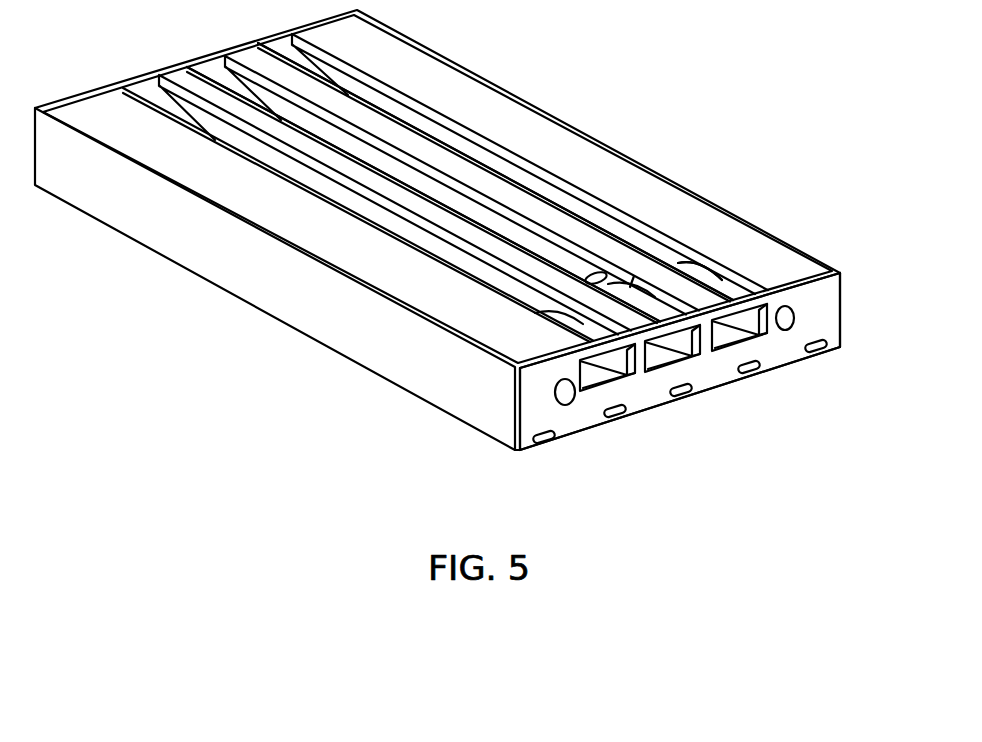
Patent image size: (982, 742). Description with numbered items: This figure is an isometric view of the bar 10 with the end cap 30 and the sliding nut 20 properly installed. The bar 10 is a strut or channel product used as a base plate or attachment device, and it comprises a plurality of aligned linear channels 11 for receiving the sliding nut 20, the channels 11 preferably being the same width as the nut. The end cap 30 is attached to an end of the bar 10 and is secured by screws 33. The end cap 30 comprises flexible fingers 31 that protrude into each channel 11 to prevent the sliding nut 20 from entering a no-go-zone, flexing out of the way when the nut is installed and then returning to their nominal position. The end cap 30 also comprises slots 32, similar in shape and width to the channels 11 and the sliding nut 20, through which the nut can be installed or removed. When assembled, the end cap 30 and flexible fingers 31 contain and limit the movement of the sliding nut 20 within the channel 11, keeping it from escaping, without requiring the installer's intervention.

The bar 10 is at (553, 96).
The channels 11 is at (433, 133).
The sliding nut 20 is at (605, 272).
The end cap 30 is at (829, 315).
The flexible fingers 31 is at (713, 285).
The slots 32 is at (665, 354).
The screws 33 is at (576, 394).